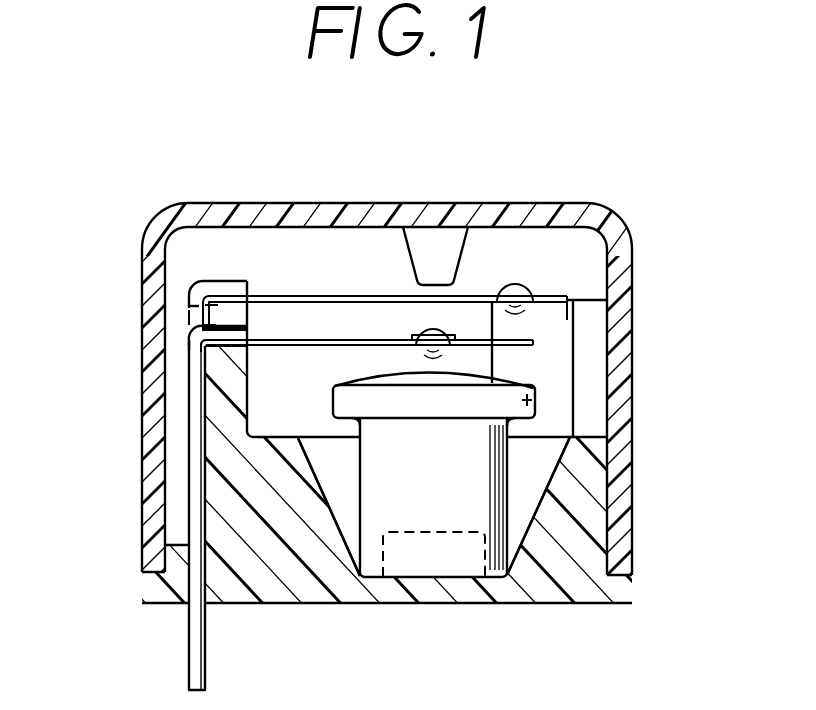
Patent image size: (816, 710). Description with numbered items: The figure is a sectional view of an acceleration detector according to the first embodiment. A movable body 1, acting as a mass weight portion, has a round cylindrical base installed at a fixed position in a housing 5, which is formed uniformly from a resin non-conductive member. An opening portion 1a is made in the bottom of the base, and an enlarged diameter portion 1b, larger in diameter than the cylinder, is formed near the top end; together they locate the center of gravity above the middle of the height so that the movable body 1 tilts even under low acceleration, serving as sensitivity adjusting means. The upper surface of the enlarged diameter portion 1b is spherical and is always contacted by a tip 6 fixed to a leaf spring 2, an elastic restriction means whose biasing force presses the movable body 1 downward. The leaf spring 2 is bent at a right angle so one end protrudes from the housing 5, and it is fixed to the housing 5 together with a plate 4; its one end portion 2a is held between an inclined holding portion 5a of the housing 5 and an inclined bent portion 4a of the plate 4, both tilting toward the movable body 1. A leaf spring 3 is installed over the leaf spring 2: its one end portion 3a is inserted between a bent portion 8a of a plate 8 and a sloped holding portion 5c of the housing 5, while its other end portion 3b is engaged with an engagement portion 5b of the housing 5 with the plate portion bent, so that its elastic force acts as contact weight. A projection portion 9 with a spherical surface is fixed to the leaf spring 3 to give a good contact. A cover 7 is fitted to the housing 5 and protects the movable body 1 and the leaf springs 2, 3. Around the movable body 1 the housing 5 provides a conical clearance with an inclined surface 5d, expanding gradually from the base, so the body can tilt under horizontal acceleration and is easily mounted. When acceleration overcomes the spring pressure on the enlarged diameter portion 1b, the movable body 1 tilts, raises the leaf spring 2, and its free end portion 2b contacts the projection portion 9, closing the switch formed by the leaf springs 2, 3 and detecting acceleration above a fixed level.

The movable body 1 is at (470, 512).
The opening portion 1a is at (443, 562).
The enlarged diameter portion 1b is at (533, 400).
The leaf spring 2 is at (311, 339).
The one end portion 2a is at (203, 343).
The free end portion 2b is at (537, 349).
The leaf spring 3 is at (369, 232).
The one end portion 3a is at (192, 282).
The other end portion 3b is at (600, 298).
The plate 4 is at (192, 512).
The bent portion 4a is at (231, 333).
The housing 5 is at (320, 588).
The holding portion 5a is at (226, 355).
The engagement portion 5b is at (558, 330).
The holding portion 5c is at (190, 308).
The inclined surface 5d is at (540, 505).
The tip 6 is at (452, 360).
The cover 7 is at (535, 210).
The plate 8 is at (203, 298).
The bent portion 8a is at (228, 298).
The projection portion 9 is at (512, 297).